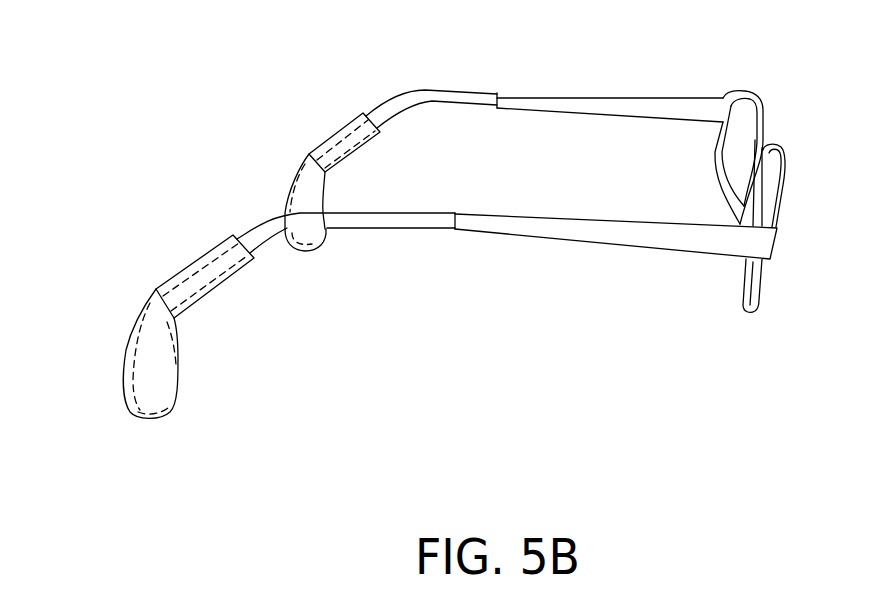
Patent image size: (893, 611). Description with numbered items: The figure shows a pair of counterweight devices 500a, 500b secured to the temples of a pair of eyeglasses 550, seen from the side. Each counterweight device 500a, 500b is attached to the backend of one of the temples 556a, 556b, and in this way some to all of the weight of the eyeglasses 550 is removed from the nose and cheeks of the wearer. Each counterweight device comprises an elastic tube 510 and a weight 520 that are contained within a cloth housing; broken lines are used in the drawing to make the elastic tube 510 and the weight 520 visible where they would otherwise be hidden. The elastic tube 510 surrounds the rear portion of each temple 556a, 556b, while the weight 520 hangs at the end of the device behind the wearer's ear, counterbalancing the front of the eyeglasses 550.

The counterweight device 500a is at (303, 165).
The counterweight device 500b is at (152, 303).
The elastic tube 510 is at (345, 119).
The weight 520 is at (330, 233).
The eyeglasses 550 is at (647, 108).
The temple 556a is at (533, 104).
The temple 556b is at (505, 232).